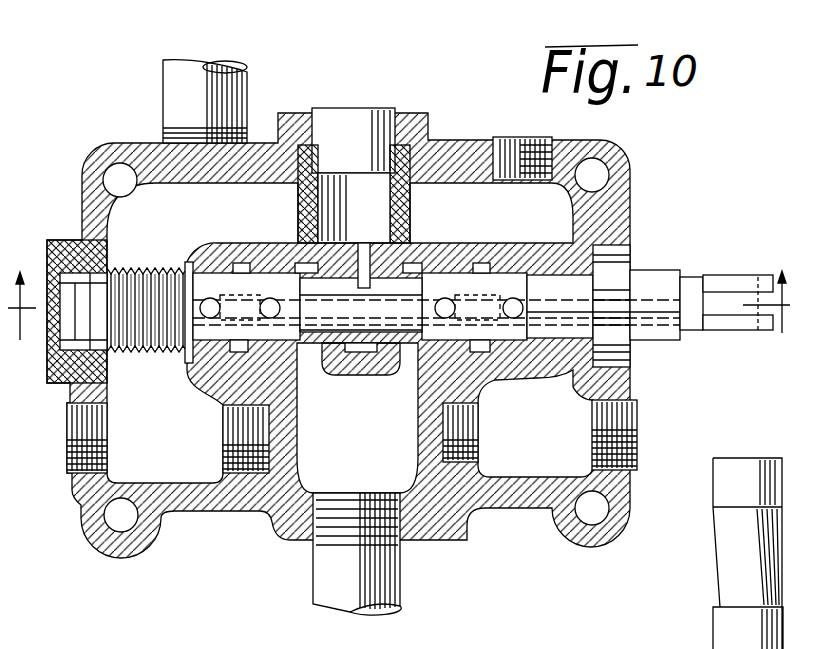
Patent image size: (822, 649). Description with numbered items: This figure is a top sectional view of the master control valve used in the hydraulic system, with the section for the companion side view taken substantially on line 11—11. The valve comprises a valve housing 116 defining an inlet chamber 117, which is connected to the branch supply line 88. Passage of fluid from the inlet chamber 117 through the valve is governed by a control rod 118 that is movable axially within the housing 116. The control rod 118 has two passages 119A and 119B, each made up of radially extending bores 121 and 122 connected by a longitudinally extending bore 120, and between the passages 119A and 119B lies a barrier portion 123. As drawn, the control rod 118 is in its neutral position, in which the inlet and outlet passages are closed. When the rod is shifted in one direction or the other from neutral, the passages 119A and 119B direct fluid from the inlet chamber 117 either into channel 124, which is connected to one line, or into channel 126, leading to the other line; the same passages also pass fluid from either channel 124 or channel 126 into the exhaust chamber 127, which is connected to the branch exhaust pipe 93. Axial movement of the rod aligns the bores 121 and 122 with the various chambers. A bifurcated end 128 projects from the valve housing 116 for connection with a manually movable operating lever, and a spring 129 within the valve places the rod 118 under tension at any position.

The section line 11— 11 is at (398, 305).
The branch supply line 88 is at (396, 580).
The branch exhaust pipe 93 is at (163, 91).
The valve housing 116 is at (452, 142).
The inlet chamber 117 is at (373, 455).
The control rod 118 is at (575, 306).
The passage 119A is at (207, 320).
The passage 119B is at (530, 298).
The longitudinally extending bore 120 is at (420, 368).
The radially extending bore 121 is at (178, 258).
The radially extending bore 122 is at (303, 347).
The barrier portion 123 is at (331, 292).
The channel 124 is at (228, 366).
The channel 126 is at (488, 350).
The exhaust chamber 127 is at (240, 215).
The bifurcated end 128 is at (732, 283).
The spring 129 is at (127, 270).